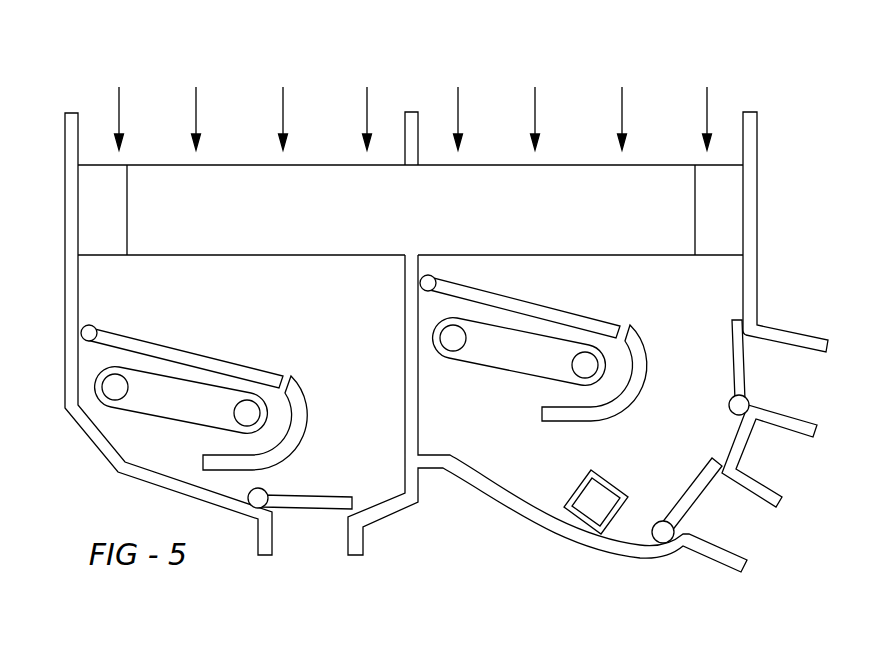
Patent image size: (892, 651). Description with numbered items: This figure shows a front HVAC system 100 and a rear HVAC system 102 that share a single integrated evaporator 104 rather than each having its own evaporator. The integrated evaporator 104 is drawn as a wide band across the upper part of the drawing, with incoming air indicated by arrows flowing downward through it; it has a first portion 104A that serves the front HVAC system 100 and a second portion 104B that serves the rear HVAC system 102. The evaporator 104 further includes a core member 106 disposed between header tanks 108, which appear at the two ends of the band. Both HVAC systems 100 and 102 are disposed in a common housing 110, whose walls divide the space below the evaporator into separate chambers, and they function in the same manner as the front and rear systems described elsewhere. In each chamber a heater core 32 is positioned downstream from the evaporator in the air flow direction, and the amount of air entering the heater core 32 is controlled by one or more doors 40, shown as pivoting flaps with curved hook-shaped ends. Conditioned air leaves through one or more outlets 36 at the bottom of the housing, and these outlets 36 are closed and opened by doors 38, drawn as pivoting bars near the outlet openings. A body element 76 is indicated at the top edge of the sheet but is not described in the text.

The vehicle body panel 76 is at (445, 0).
The front HVAC system 100 is at (730, 90).
The rear HVAC system 102 is at (157, 107).
The integrated evaporator 104 is at (712, 158).
The first portion 104A is at (677, 257).
The second portion 104B is at (195, 257).
The core member 106 is at (600, 212).
The header tanks 108 is at (105, 192).
The housing 110 is at (55, 330).
The doors 40 is at (180, 348).
The heater core 32 is at (180, 423).
The doors 38 is at (310, 492).
The outlets 36 is at (318, 530).